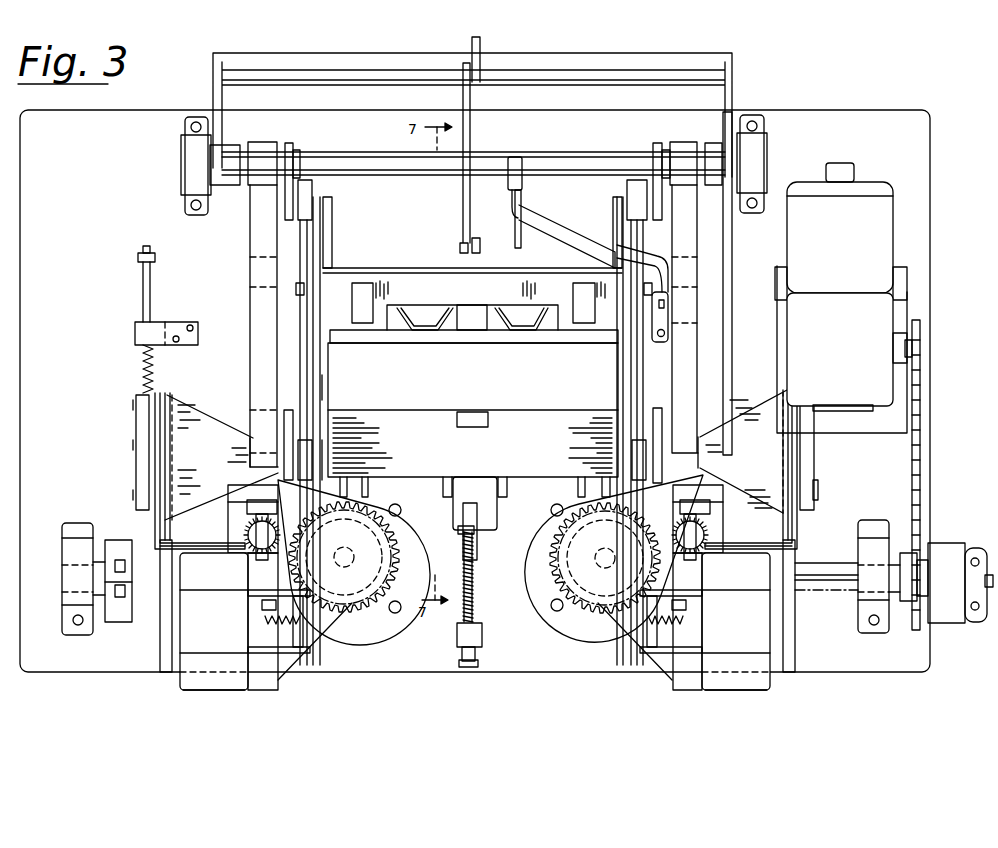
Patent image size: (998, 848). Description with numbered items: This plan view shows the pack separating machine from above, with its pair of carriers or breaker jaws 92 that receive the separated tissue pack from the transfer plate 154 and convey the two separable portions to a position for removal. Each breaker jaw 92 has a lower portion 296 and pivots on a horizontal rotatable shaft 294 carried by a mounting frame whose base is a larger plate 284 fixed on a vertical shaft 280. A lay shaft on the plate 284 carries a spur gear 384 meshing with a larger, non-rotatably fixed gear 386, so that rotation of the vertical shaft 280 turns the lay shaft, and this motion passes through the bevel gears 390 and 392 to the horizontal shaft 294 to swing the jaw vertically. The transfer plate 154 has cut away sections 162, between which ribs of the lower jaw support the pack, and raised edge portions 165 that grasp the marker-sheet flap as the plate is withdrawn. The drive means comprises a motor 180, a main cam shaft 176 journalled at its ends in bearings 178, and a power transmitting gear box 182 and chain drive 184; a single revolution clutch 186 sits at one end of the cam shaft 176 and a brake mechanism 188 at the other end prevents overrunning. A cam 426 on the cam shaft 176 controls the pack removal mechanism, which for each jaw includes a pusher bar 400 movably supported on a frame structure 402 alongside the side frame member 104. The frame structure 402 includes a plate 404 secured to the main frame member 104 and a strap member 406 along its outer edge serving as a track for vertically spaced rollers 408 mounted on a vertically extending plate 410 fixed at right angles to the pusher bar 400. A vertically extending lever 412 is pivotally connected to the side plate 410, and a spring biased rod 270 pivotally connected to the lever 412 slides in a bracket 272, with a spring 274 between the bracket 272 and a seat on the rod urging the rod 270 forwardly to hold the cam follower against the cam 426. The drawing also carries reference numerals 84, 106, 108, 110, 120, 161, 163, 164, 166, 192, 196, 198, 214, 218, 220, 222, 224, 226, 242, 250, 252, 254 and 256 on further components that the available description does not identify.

The frame member 84 is at (322, 380).
The breaker jaws 92 is at (475, 621).
The side frame member 104 is at (253, 243).
The roller 106 is at (272, 137).
The shaft 108 is at (298, 162).
The guide rod 110 is at (303, 218).
The disc 120 is at (285, 190).
The transfer plate 154 is at (433, 257).
The side wall 161 is at (335, 238).
The cut away sections 162 is at (406, 307).
The channel 163 is at (541, 320).
The bottom rail 164 is at (426, 336).
The raised edge portions 165 is at (440, 310).
The housing 166 is at (473, 420).
The main cam shaft 176 is at (840, 563).
The bearings 178 is at (858, 585).
The motor 180 is at (840, 228).
The gear box 182 is at (843, 339).
The chain drive 184 is at (921, 406).
The single revolution clutch 186 is at (956, 632).
The brake mechanism 188 is at (120, 622).
The arm 192 is at (521, 236).
The link 196 is at (565, 226).
The rod 198 is at (642, 261).
The bracket 214 is at (660, 342).
The rod 218 is at (472, 118).
The rail 220 is at (564, 85).
The rail 222 is at (578, 153).
The bearing 224 is at (182, 150).
The strip 226 is at (723, 258).
The block 242 is at (497, 500).
The nut 250 is at (477, 655).
The bushing 252 is at (483, 633).
The screw 254 is at (474, 590).
The bolt 256 is at (460, 530).
The spring biased rod 270 is at (143, 286).
The bracket 272 is at (163, 322).
The spring 274 is at (143, 365).
The vertical shaft 280 is at (474, 557).
The larger plate 284 is at (335, 646).
The rotatable shaft 294 is at (247, 557).
The lower portion of breaker jaw 296 is at (235, 698).
The spur gear 384 is at (474, 557).
The larger gear 386 is at (368, 612).
The bevel gear 390 is at (712, 531).
The bevel gear 392 is at (712, 516).
The pusher bar 400 is at (198, 543).
The frame structure 402 is at (474, 455).
The plate 404 is at (190, 410).
The strap member 406 is at (157, 430).
The rollers 408 is at (170, 490).
The vertically extending plate 410 is at (155, 525).
The lever 412 is at (137, 460).
The cam 426 is at (819, 492).